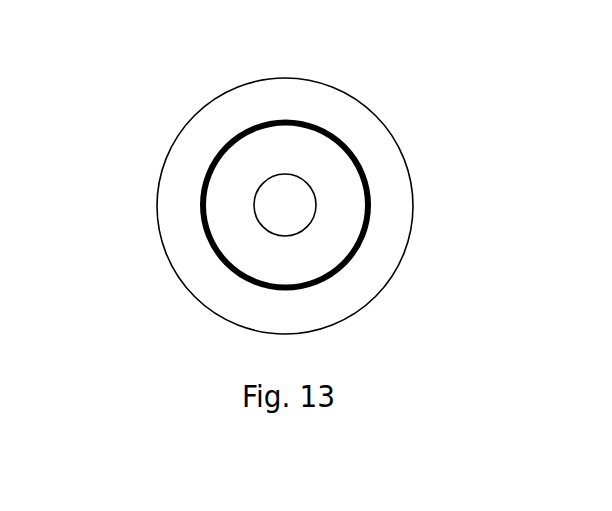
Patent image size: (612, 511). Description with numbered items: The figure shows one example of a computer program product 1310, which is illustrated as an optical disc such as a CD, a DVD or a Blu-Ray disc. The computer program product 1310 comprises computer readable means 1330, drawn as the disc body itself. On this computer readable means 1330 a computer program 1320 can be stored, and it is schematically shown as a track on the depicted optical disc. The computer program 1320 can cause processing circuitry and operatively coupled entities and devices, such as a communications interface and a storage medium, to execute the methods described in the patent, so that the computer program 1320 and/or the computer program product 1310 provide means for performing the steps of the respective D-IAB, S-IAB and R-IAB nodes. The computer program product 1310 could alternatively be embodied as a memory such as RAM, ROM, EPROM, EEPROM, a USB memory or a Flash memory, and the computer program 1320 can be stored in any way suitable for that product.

The computer program product 1310 is at (402, 124).
The computer program 1320 is at (206, 224).
The computer readable means 1330 is at (240, 310).